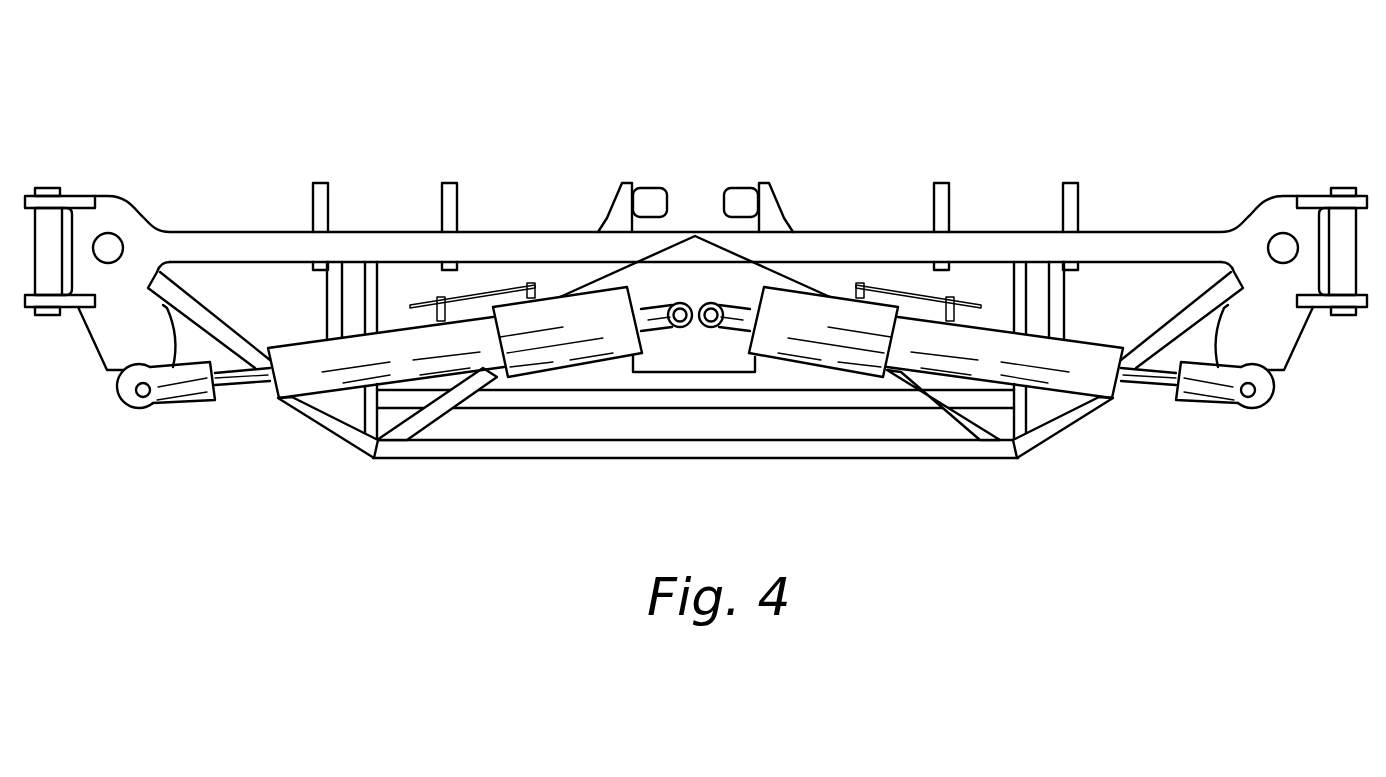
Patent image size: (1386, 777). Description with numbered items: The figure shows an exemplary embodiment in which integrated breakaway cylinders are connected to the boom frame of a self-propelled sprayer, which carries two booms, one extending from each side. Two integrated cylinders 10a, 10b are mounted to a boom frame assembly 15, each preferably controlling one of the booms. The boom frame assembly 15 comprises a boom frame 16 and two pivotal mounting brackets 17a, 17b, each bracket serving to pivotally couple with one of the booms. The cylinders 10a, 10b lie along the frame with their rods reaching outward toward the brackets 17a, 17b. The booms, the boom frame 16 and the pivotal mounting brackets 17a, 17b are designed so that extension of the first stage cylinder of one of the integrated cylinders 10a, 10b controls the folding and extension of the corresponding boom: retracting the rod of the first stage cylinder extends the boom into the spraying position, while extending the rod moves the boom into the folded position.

The boom frame assembly 15 is at (696, 261).
The boom frame 16 is at (568, 242).
The pivotal mounting bracket 17a is at (123, 207).
The pivotal mounting bracket 17b is at (1262, 215).
The integrated cylinder 10a is at (363, 363).
The integrated cylinder 10b is at (1020, 352).